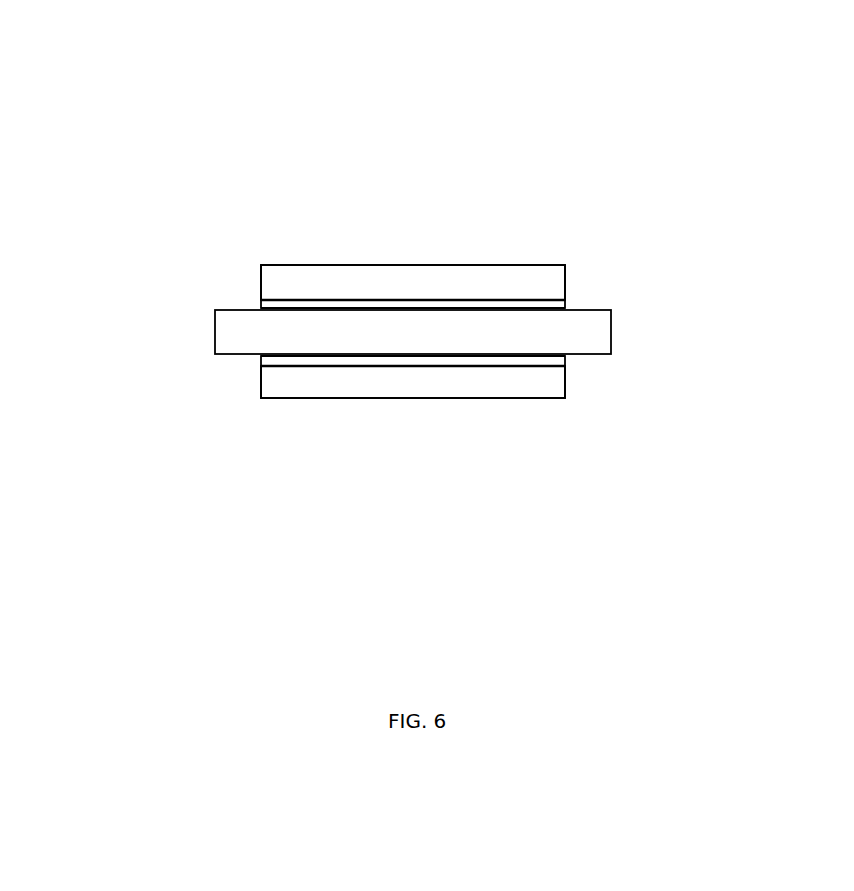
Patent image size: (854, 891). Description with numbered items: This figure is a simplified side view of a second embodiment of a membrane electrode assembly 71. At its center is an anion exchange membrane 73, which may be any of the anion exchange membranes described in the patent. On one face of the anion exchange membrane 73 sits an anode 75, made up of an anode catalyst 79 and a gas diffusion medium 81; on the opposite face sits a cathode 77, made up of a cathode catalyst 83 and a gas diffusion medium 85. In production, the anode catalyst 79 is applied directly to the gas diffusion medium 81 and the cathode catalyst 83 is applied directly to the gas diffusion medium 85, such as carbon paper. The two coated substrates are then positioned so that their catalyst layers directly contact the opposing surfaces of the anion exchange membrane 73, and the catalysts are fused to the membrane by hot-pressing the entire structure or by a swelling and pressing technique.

The membrane electrode assembly 71 is at (157, 163).
The anion exchange membrane 73 is at (613, 332).
The anode 75 is at (261, 265).
The cathode 77 is at (261, 356).
The anode catalyst 79 is at (565, 303).
The gas diffusion medium 81 is at (537, 265).
The cathode catalyst 83 is at (566, 359).
The gas diffusion medium 85 is at (552, 400).